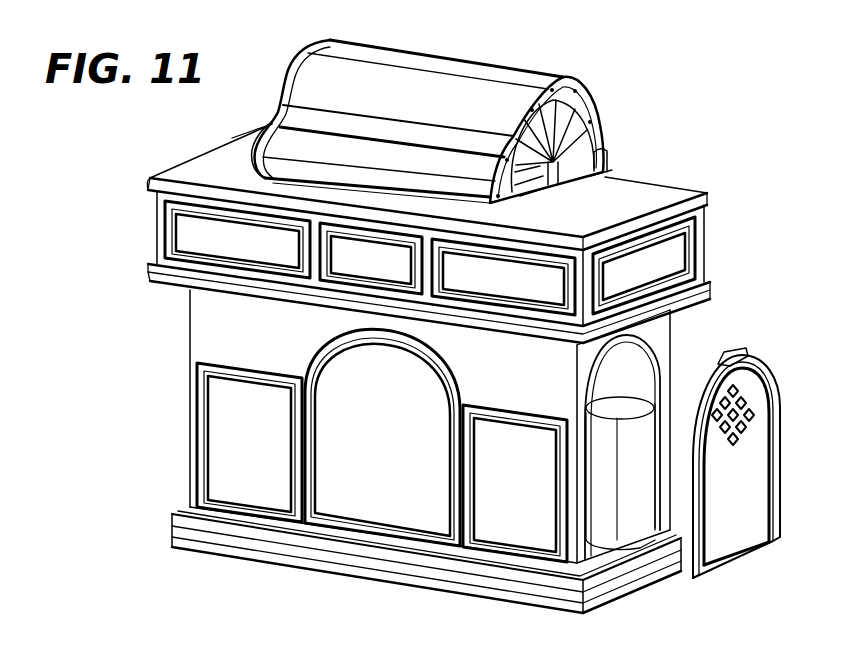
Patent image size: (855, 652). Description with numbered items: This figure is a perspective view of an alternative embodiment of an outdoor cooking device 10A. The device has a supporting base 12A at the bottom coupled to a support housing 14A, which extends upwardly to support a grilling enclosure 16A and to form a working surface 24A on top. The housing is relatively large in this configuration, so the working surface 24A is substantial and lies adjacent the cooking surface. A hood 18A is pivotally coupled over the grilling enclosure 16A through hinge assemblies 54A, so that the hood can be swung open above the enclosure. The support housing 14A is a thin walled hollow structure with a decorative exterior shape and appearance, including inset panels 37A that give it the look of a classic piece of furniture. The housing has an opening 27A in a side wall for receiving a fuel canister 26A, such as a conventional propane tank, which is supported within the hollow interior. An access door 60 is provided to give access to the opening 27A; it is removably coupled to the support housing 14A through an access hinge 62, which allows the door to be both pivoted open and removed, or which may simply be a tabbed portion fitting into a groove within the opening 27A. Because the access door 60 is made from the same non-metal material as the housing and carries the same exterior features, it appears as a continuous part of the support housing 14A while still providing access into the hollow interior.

The outdoor cooking device 10A is at (636, 104).
The supporting base 12A is at (195, 553).
The support housing 14A is at (145, 213).
The grilling enclosure 16A is at (248, 172).
The hood 18A is at (480, 66).
The working surface 24A is at (205, 162).
The fuel canister 26A is at (605, 508).
The opening 27A is at (632, 368).
The inset panels 37A is at (657, 253).
The hinge assemblies 54A is at (610, 167).
The access door 60 is at (740, 461).
The access hinge 62 is at (722, 356).